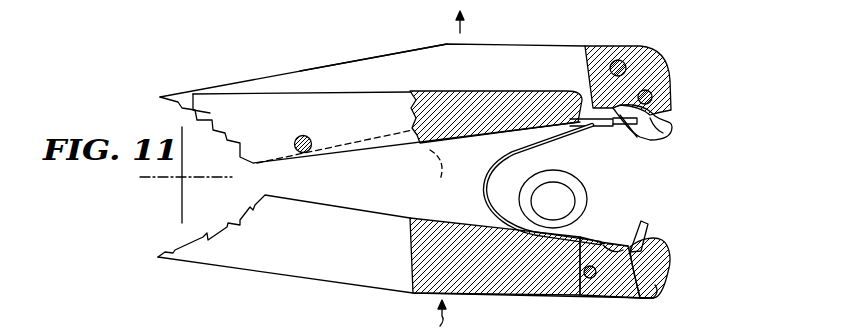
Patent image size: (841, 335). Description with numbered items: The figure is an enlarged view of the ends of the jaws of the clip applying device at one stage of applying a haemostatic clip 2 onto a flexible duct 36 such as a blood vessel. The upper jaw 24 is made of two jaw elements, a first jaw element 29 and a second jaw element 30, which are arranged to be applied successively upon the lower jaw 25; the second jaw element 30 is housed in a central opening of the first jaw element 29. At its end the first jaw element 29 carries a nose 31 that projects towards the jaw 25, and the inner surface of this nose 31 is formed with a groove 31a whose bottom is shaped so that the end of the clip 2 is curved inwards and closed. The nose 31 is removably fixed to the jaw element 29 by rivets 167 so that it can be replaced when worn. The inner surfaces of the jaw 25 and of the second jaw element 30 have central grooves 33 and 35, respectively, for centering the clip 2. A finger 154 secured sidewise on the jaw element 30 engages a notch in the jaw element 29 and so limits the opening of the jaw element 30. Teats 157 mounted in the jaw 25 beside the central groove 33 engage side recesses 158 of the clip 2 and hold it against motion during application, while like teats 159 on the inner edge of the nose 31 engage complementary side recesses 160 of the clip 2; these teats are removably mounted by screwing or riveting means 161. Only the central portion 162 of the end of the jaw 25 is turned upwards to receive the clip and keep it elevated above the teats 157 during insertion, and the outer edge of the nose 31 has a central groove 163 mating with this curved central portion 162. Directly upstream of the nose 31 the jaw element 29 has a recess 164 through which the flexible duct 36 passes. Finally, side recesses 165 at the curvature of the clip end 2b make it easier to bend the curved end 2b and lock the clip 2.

The haemostatic clip 2 is at (495, 160).
The free end portion 2b is at (653, 297).
The jaw 24 is at (478, 21).
The jaw 25 is at (420, 317).
The first jaw element 29 is at (343, 73).
The second jaw element 30 is at (257, 107).
The nose 31 is at (657, 57).
The groove 31a is at (637, 137).
The central groove 33 is at (410, 232).
The central groove 35 is at (470, 143).
The flexible duct 36 is at (572, 203).
The finger 154 is at (308, 153).
The teat 157 is at (603, 232).
The side recess 158 is at (648, 221).
The teat 159 is at (603, 128).
The side recess 160 is at (594, 128).
The screwing or riveting means 161 is at (585, 288).
The central portion 162 is at (670, 245).
The central groove 163 is at (665, 121).
The recess 164 is at (414, 169).
The side recess 165 is at (663, 273).
The rivet 167 is at (618, 62).